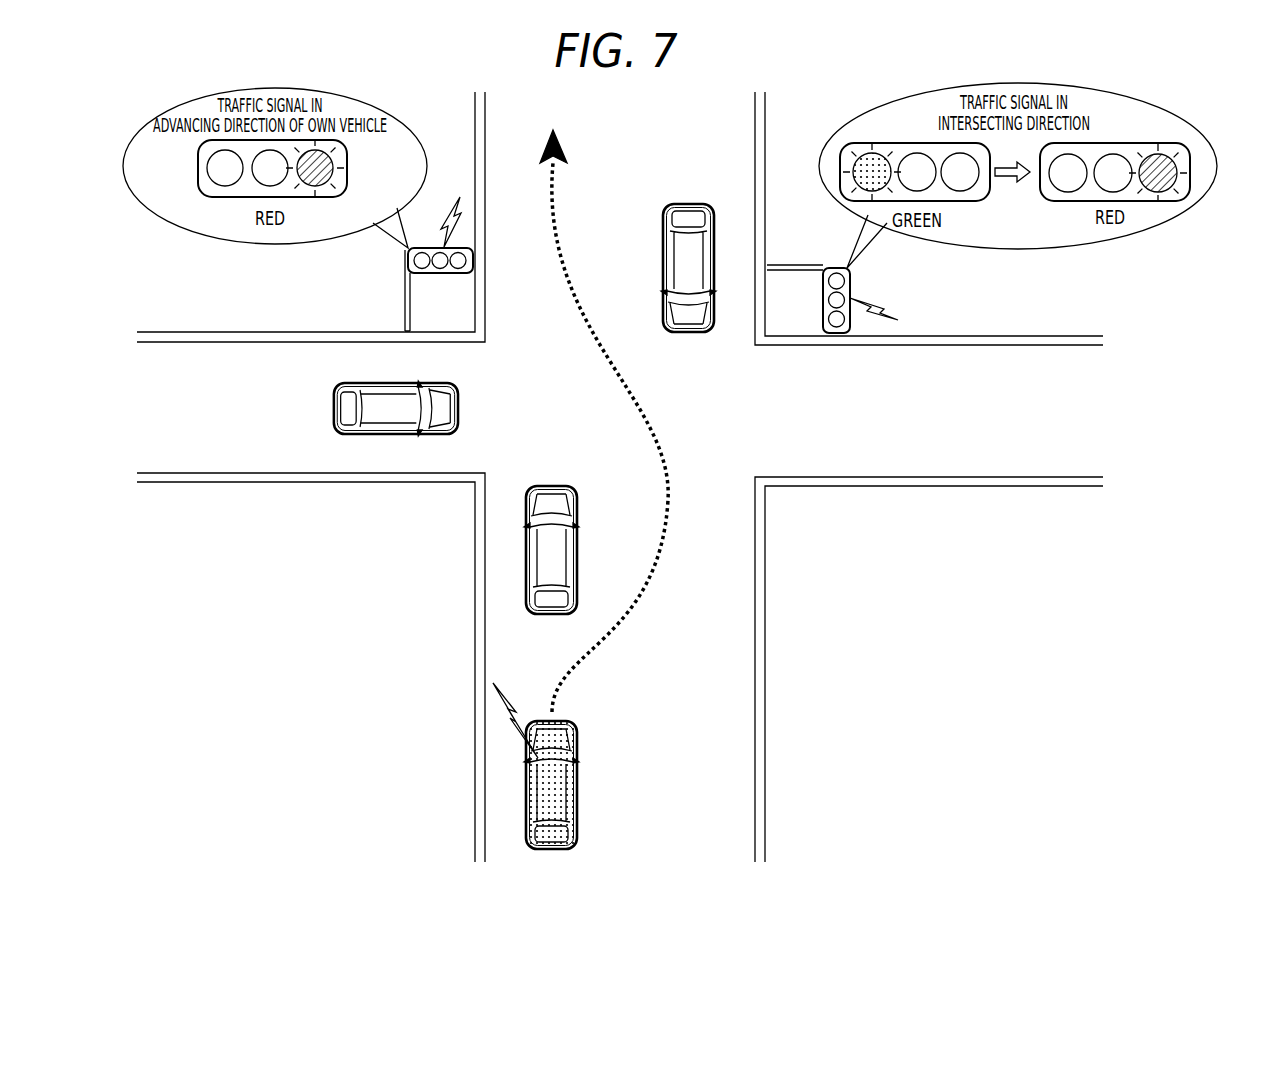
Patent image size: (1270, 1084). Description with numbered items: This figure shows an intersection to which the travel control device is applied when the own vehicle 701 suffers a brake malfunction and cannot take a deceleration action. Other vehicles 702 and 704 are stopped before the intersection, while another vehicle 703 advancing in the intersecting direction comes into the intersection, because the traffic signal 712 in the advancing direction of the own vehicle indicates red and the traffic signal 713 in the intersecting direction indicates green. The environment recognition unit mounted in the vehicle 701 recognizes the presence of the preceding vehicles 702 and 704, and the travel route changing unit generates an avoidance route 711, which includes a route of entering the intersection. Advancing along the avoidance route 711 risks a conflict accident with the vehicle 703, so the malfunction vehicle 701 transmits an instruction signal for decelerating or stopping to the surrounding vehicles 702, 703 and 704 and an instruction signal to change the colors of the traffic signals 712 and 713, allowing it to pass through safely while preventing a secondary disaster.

The vehicle 701 is at (578, 797).
The other vehicle 702 is at (578, 512).
The vehicle advancing in the intersecting direction 703 is at (332, 405).
The other vehicle 704 is at (662, 255).
The avoidance route 711 is at (558, 186).
The traffic signal in advancing direction 712 is at (405, 288).
The traffic signal in intersecting direction 713 is at (813, 263).